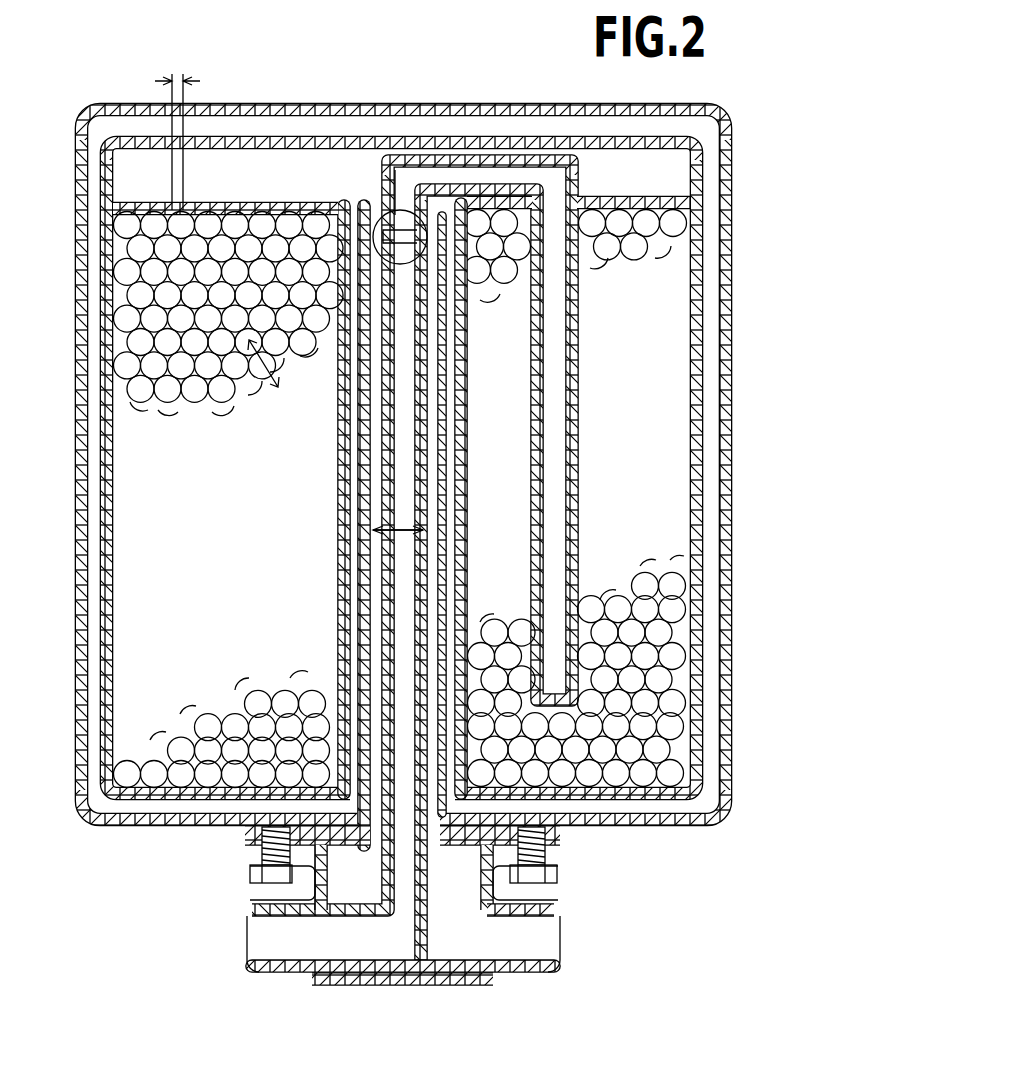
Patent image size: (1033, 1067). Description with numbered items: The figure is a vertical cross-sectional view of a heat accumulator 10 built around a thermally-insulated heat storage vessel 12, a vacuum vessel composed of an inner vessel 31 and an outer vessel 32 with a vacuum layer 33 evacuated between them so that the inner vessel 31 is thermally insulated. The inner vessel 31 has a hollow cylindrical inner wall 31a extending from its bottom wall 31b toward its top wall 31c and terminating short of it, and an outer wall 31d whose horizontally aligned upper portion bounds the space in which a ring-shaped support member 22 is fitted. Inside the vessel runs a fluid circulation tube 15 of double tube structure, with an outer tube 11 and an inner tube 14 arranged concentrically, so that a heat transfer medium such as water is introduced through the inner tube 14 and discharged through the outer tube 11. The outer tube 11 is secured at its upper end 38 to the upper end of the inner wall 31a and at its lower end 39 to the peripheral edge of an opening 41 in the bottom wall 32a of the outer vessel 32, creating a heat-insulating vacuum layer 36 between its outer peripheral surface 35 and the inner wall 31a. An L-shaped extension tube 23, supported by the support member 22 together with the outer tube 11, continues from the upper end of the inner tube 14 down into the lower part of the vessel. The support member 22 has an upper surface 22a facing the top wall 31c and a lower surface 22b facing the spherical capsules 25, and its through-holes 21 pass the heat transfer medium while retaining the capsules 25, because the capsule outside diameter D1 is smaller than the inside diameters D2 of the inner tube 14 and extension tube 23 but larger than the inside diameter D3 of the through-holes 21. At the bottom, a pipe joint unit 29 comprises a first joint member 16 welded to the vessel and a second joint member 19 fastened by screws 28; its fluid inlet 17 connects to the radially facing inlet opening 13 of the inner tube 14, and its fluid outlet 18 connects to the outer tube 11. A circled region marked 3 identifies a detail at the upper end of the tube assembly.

The heat accumulator 10 is at (781, 158).
The detail portion 3 is at (401, 212).
The outer tube 11 is at (432, 465).
The thermally-insulated heat storage vessel 12 is at (752, 397).
The inlet opening 13 is at (380, 915).
The inner tube 14 is at (378, 867).
The fluid circulation tube 15 is at (340, 605).
The first joint member 16 is at (232, 834).
The fluid inlet 17 is at (252, 945).
The fluid outlet 18 is at (556, 950).
The second joint member 19 is at (315, 984).
The through-holes 21 is at (150, 200).
The support member 22 is at (300, 200).
The upper surface 22a is at (628, 200).
The lower surface 22b is at (660, 240).
The extension tube 23 is at (583, 492).
The capsules 25 is at (215, 392).
The screws 28 is at (262, 885).
The pipe joint unit 29 is at (592, 851).
The inner vessel 31 is at (700, 525).
The inner wall 31a is at (460, 365).
The bottom wall 31b is at (650, 802).
The top wall 31c is at (590, 112).
The outer wall 31d is at (700, 338).
The outer vessel 32 is at (722, 585).
The bottom wall 32a is at (173, 830).
The vacuum layer 33 is at (714, 627).
The outer peripheral surface 35 is at (450, 612).
The vacuum layer (heat insulating layer) 36 is at (448, 566).
The upper end 38 is at (440, 207).
The lower end 39 is at (440, 845).
The opening 41 is at (440, 825).
The outside diameter D1 is at (276, 392).
The inside diameters D2 is at (365, 525).
The inside diameter D3 is at (200, 130).